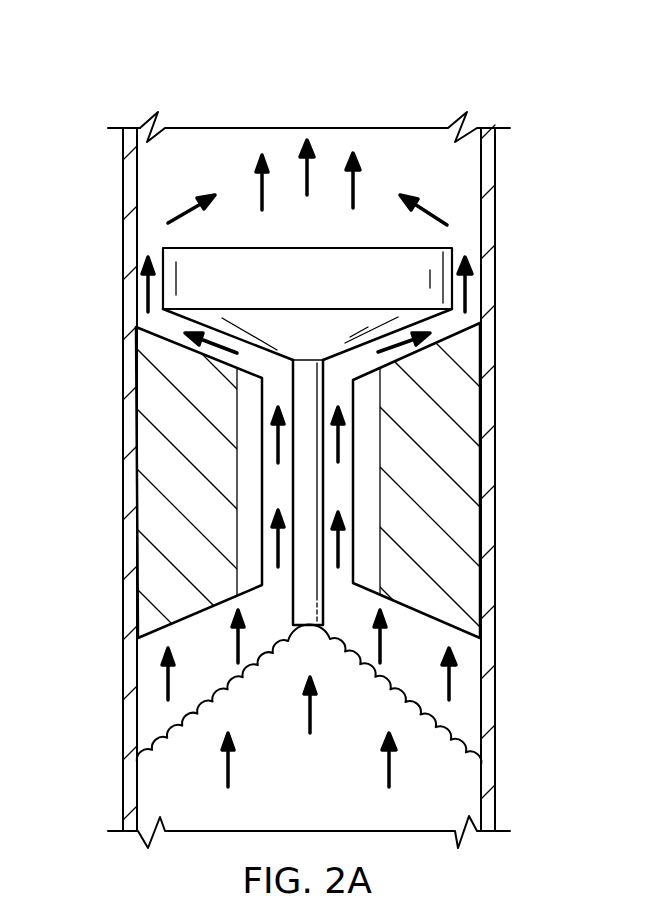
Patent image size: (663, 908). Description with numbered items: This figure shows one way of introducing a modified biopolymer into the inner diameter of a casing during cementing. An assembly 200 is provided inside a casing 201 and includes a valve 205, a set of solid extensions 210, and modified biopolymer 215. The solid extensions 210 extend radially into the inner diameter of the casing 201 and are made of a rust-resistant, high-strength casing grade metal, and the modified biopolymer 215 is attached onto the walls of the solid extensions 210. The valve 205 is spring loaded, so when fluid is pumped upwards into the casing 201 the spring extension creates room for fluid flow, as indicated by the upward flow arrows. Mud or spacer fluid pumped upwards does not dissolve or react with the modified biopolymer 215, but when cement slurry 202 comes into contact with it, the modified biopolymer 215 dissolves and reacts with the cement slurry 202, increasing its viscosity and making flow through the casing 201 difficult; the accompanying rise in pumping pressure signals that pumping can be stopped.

The assembly 200 is at (245, 62).
The casing 201 is at (127, 180).
The cement slurry 202 is at (170, 735).
The valve 205 is at (330, 292).
The solid extensions 210 is at (460, 403).
The modified biopolymer 215 is at (368, 493).